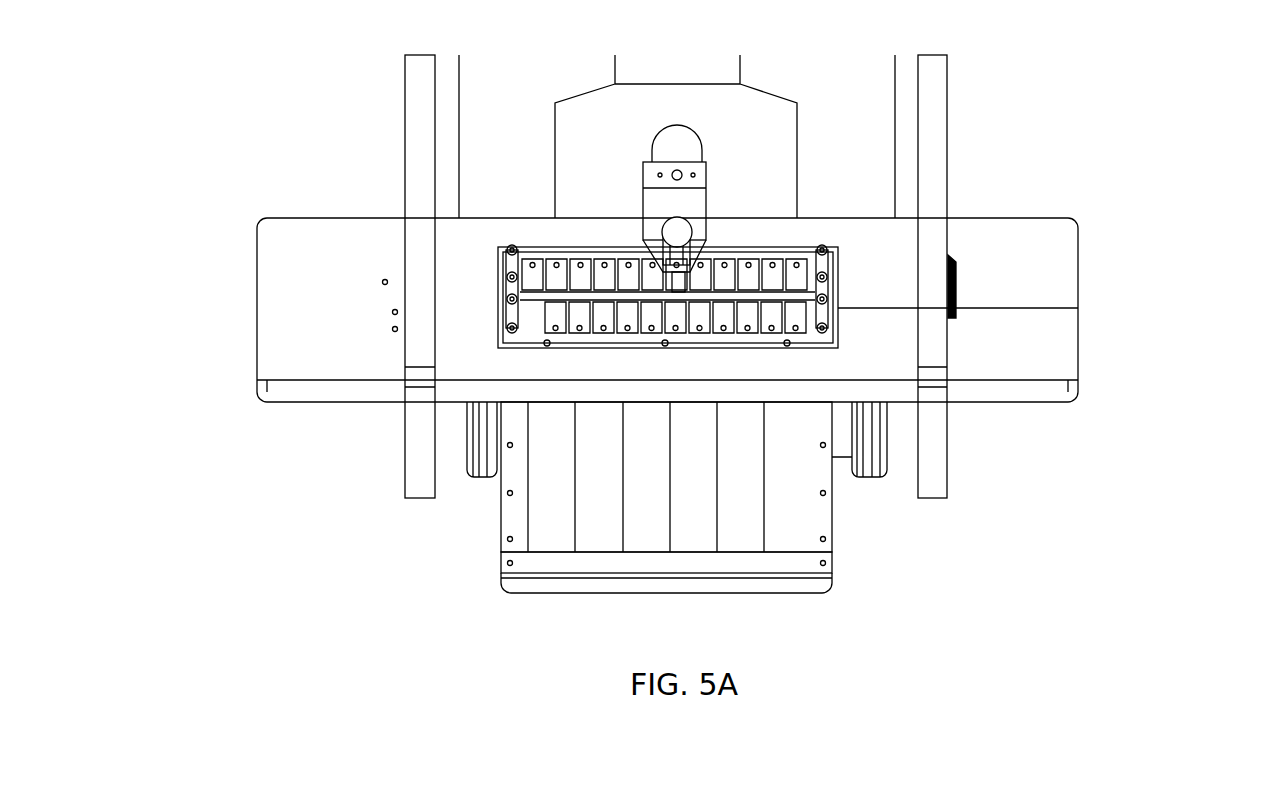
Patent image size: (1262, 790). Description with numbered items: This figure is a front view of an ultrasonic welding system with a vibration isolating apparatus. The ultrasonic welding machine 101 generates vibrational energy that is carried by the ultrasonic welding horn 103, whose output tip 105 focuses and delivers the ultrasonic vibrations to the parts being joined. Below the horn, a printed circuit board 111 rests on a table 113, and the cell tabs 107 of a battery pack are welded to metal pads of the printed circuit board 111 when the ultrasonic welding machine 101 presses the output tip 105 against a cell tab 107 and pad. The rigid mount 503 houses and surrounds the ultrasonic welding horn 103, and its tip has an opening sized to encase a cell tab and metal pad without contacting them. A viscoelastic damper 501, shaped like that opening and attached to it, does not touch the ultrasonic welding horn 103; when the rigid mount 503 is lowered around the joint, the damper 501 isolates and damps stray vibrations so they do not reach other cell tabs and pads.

The ultrasonic welding machine 101 is at (724, 103).
The ultrasonic welding horn 103 is at (652, 148).
The output tip 105 is at (675, 257).
The cell tab 107 is at (533, 318).
The printed circuit board 111 is at (497, 258).
The table 113 is at (1050, 322).
The damper 501 is at (652, 290).
The rigid mount 503 is at (697, 229).